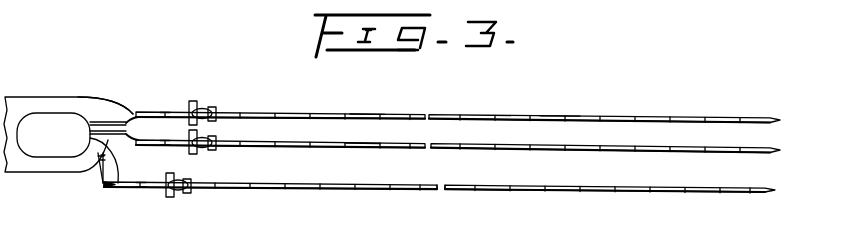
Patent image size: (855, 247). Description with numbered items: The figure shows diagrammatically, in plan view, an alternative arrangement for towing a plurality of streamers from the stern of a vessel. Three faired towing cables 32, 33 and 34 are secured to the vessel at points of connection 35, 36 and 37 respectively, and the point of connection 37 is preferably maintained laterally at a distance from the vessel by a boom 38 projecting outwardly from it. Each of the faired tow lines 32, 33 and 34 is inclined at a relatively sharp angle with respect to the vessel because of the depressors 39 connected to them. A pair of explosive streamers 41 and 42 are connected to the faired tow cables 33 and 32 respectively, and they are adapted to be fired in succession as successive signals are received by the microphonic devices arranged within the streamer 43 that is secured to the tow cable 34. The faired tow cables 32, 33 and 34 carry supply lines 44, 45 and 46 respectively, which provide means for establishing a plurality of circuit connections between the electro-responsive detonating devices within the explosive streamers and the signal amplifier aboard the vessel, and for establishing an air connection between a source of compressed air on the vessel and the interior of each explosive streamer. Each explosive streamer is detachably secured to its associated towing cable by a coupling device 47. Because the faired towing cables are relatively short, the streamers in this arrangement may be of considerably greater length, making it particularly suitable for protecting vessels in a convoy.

The faired towing cable 32 is at (154, 110).
The faired towing cable 33 is at (155, 140).
The faired towing cable 34 is at (132, 188).
The point of connection 35 is at (100, 112).
The point of connection 36 is at (119, 143).
The point of connection 37 is at (102, 185).
The boom 38 is at (98, 168).
The depressor 39 is at (196, 102).
The explosive streamer 41 is at (362, 143).
The explosive streamer 42 is at (376, 113).
The streamer 43 is at (437, 190).
The supply line 44 is at (97, 121).
The supply line 45 is at (97, 122).
The supply line 46 is at (68, 173).
The coupling device 47 is at (161, 113).